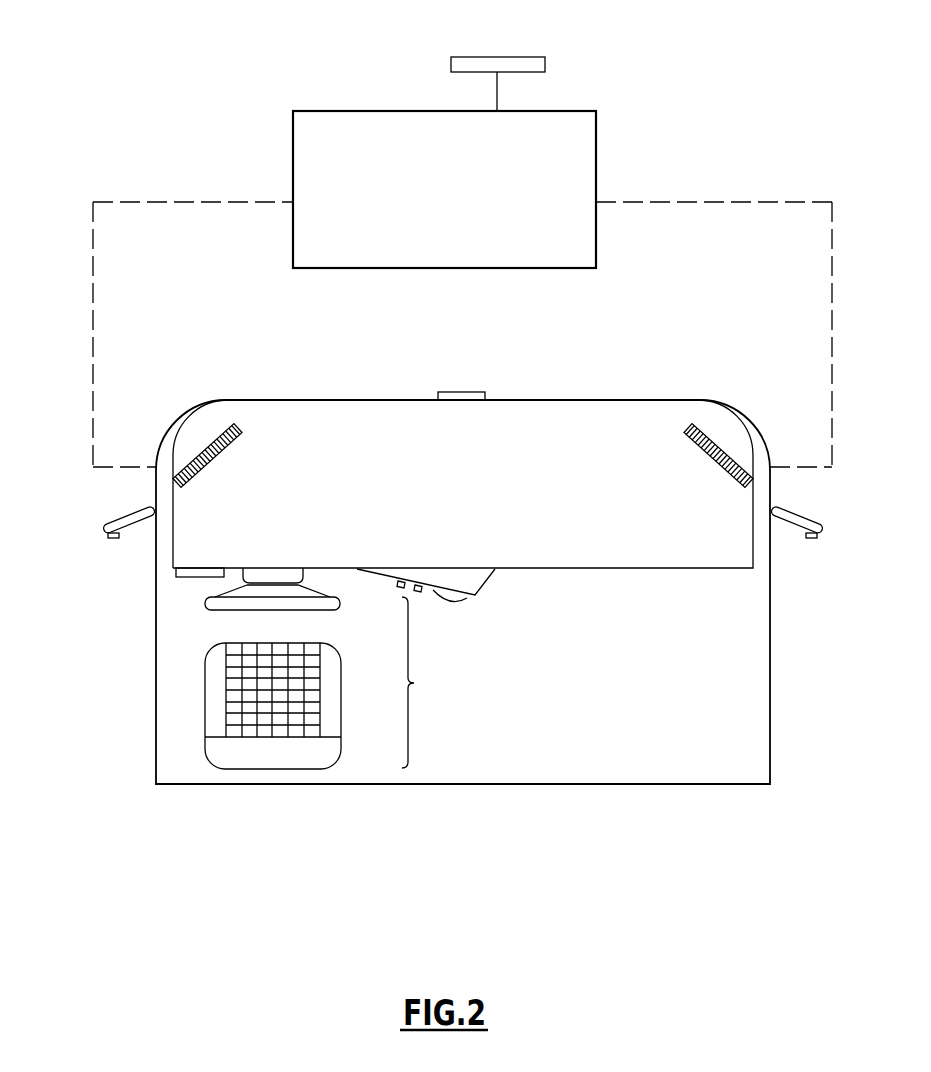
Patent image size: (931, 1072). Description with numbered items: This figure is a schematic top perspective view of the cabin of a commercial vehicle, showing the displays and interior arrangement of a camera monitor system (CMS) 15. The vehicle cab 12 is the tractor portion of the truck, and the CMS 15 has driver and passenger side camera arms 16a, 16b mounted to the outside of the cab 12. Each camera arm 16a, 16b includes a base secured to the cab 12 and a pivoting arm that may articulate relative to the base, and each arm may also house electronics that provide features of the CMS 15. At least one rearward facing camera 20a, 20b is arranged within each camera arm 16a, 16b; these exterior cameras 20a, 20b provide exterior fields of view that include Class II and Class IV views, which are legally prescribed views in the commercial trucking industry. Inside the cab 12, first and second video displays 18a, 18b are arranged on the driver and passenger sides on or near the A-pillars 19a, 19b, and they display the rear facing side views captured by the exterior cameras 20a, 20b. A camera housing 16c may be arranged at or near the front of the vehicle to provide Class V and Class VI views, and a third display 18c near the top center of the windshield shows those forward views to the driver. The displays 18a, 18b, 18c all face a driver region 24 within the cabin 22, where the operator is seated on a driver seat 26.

The vehicle cab 12 is at (592, 362).
The camera monitor system 15 is at (597, 124).
The driver side camera arm 16a is at (116, 520).
The passenger side camera arm 16b is at (809, 519).
The camera housing 16c is at (470, 392).
The first video display 18a is at (196, 416).
The second video display 18b is at (729, 416).
The third display 18c is at (532, 56).
The A-pillar 19a is at (176, 440).
The A-pillar 19b is at (750, 440).
The rearward facing camera 20a is at (113, 540).
The rearward facing camera 20b is at (812, 539).
The cabin 22 is at (687, 731).
The driver region 24 is at (426, 682).
The driver seat 26 is at (328, 692).